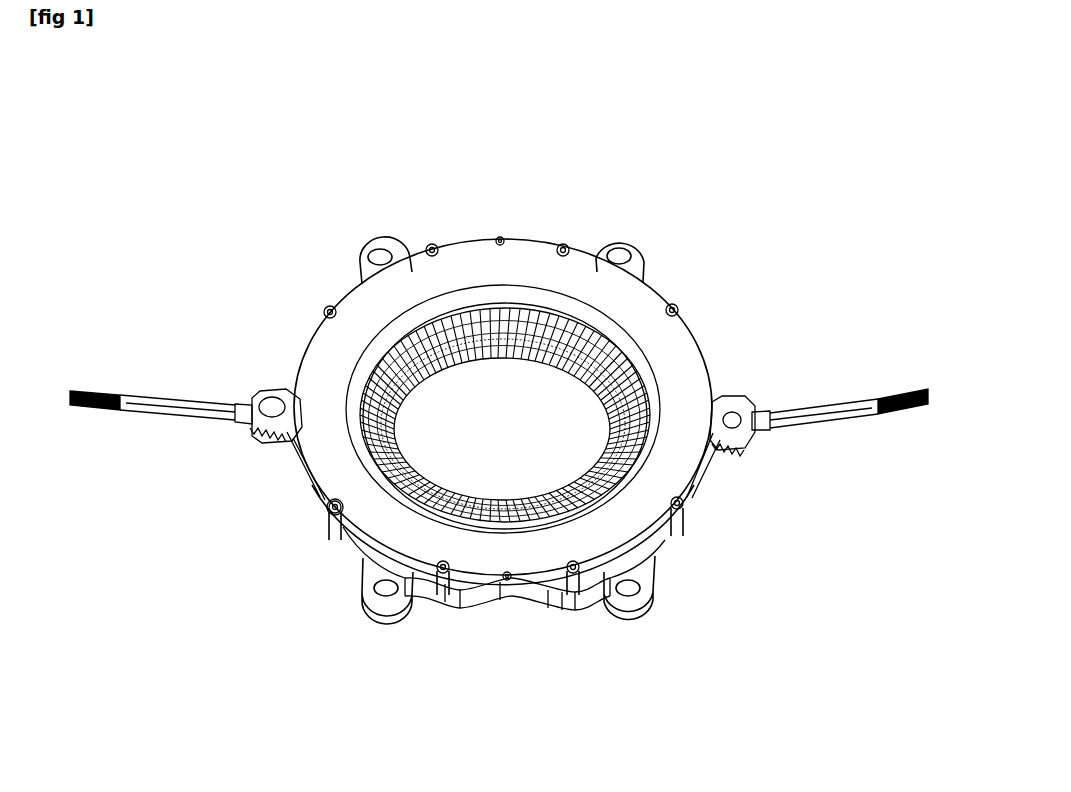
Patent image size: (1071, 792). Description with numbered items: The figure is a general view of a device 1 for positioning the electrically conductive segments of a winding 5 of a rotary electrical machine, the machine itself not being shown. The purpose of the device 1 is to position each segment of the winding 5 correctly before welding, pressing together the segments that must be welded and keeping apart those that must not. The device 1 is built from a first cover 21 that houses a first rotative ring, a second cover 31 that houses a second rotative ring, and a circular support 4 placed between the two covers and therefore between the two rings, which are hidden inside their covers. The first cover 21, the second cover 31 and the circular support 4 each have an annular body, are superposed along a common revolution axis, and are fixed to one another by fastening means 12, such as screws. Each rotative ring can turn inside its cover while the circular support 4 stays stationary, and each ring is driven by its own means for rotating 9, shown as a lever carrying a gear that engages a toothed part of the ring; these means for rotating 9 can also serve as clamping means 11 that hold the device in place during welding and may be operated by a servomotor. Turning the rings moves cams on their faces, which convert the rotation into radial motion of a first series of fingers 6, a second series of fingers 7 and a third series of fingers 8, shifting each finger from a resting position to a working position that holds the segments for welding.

The device 1 is at (501, 196).
The second cover 31 is at (468, 272).
The winding 5 is at (470, 492).
The second series of fingers 7 is at (543, 324).
The third series of fingers 8 is at (594, 336).
The first series of fingers 6 is at (610, 387).
The means for rotating 9 is at (133, 402).
The clamping means 11 is at (835, 412).
The fastening means 12 is at (336, 513).
The first cover 21 is at (467, 600).
The circular support 4 is at (543, 590).